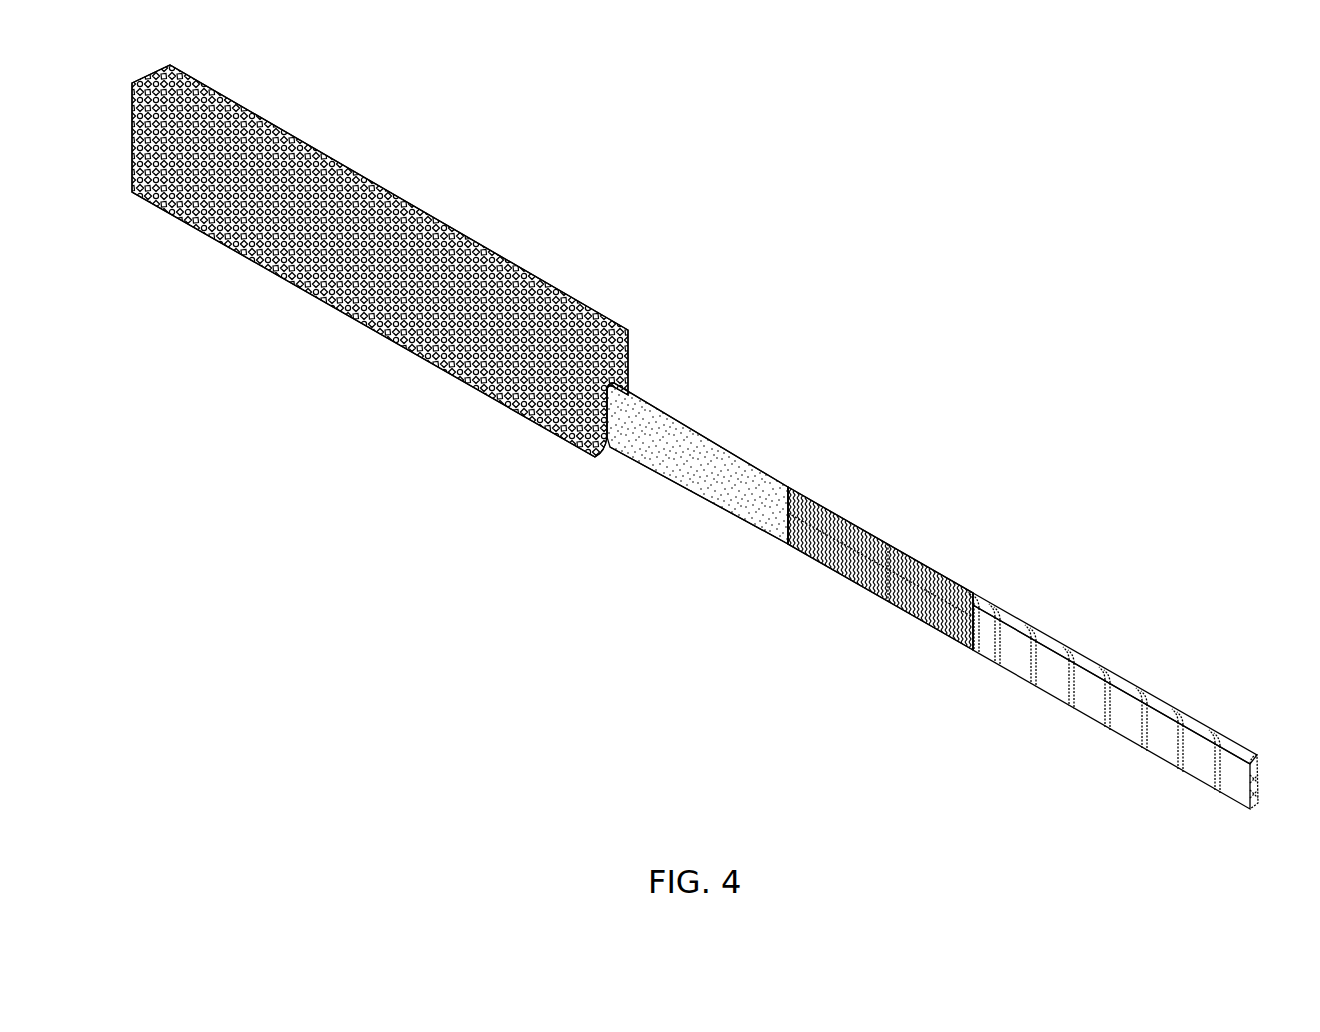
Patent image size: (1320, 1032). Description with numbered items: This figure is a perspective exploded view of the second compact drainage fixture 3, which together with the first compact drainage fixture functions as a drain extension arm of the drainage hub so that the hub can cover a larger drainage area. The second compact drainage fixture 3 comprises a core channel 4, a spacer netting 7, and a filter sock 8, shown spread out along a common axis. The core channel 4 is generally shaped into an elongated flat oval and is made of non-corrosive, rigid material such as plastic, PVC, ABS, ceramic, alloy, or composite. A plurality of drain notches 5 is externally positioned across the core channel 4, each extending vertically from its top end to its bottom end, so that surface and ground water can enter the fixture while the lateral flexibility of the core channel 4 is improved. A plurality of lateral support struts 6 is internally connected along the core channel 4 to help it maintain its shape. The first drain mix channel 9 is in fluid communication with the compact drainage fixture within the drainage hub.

The second compact drainage fixture 3 is at (432, 465).
The core channel 4 is at (1130, 701).
The plurality of drain notches 5 is at (995, 657).
The plurality of lateral support struts 6 is at (1255, 755).
The spacer netting 7 is at (875, 538).
The filter sock 8 is at (697, 433).
The first drain mix channel 9 is at (418, 213).